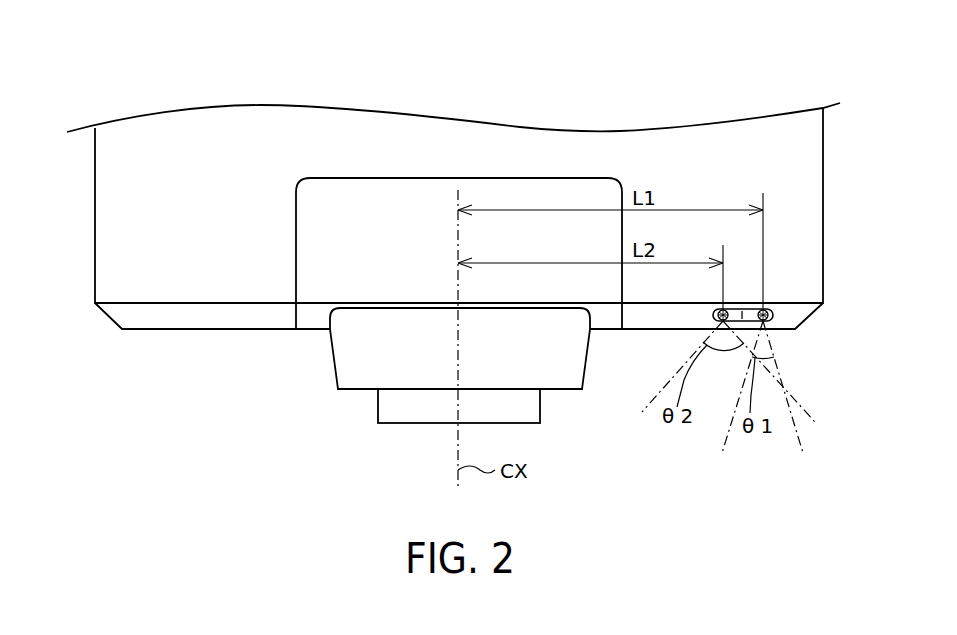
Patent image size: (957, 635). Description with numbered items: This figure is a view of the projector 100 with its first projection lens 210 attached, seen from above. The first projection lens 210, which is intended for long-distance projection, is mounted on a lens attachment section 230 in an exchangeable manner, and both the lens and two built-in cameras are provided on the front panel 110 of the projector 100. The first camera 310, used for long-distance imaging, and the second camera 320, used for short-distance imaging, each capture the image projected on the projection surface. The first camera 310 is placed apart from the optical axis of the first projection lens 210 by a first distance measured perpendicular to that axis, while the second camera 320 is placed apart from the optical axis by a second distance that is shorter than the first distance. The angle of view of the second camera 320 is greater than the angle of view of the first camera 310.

The projector 100 is at (698, 75).
The front panel 110 is at (212, 318).
The first projection lens 210 is at (498, 423).
The lens attachment section 230 is at (583, 372).
The first camera 310 is at (768, 325).
The second camera 320 is at (733, 325).